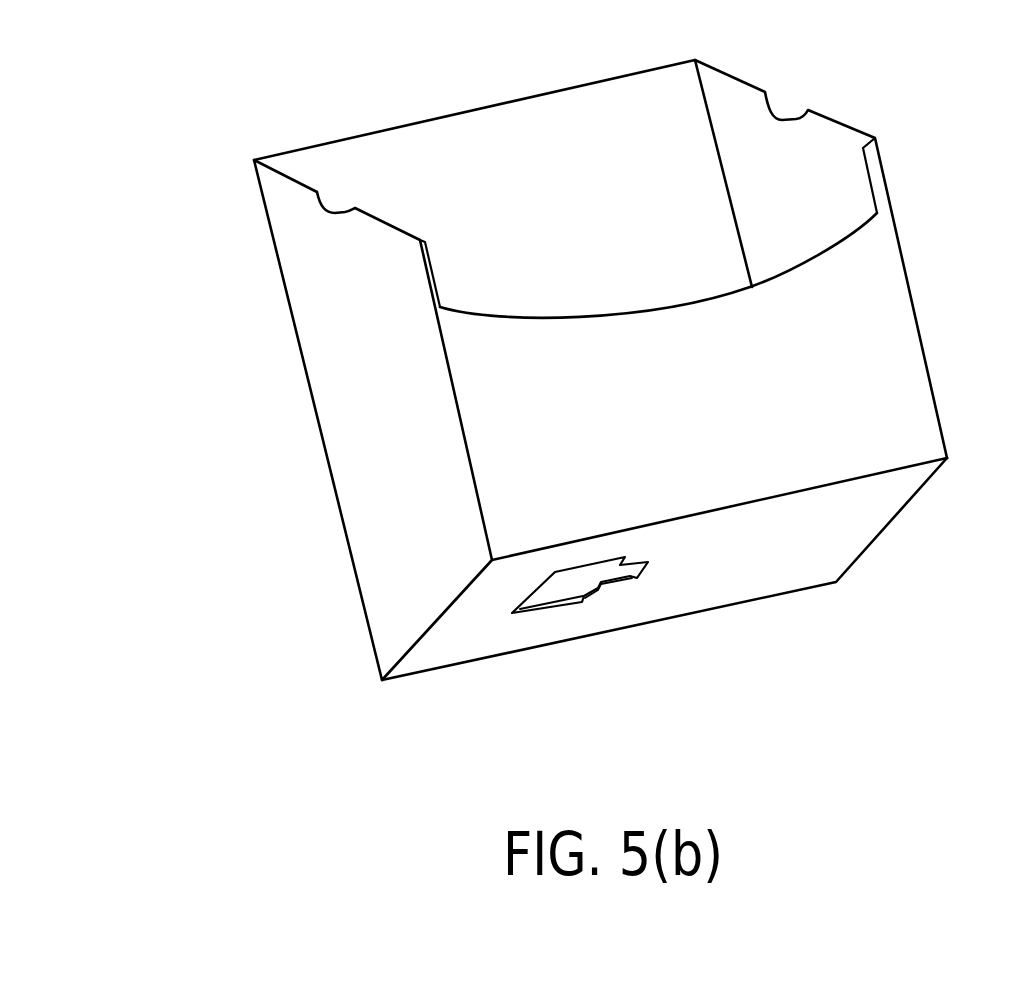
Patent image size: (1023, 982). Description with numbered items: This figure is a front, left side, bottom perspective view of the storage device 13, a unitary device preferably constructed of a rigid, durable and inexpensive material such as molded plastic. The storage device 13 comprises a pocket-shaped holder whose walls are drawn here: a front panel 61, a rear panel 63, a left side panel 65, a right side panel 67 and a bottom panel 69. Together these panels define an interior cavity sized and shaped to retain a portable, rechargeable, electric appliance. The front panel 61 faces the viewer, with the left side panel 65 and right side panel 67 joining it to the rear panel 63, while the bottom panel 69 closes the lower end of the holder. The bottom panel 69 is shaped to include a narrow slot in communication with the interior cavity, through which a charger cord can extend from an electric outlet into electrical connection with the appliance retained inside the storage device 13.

The storage device 13 is at (562, 586).
The front panel 61 is at (888, 368).
The rear panel 63 is at (405, 142).
The left side panel 65 is at (325, 373).
The right side panel 67 is at (822, 158).
The bottom panel 69 is at (788, 573).